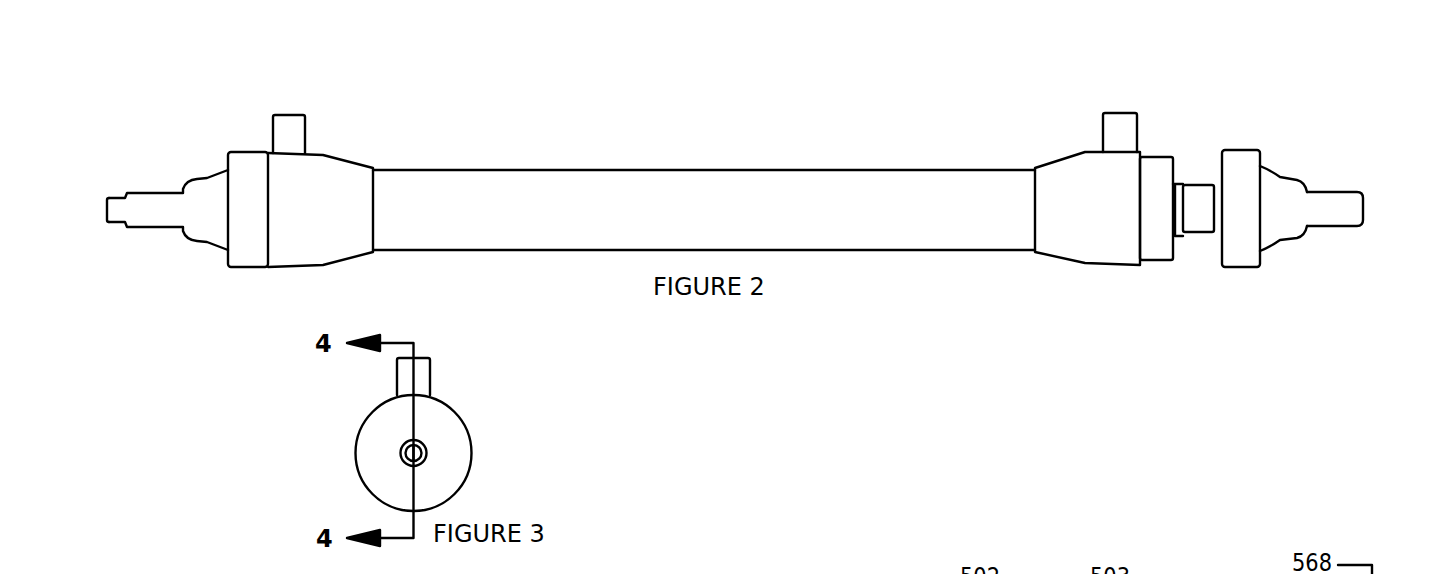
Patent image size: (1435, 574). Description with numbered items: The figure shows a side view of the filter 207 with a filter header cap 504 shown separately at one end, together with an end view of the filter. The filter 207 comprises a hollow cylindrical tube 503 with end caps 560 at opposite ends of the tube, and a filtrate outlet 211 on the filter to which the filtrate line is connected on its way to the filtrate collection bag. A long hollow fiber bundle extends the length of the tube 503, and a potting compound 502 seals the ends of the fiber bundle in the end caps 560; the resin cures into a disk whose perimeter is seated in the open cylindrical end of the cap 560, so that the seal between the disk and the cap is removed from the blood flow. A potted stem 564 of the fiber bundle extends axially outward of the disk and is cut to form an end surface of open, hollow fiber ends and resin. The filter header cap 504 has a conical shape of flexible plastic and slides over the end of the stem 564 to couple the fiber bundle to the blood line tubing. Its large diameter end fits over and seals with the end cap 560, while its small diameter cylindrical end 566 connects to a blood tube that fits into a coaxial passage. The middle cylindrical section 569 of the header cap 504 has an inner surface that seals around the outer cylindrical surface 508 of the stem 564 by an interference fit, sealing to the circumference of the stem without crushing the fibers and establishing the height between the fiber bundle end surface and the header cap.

In FIG. 2, the filter 207 is at (423, 191).
In FIG. 3, the filtrate outlet 211 is at (422, 372).
In FIG. 2, the potting compound 502 is at (1176, 186).
In FIG. 2, the hollow cylindrical tube 503 is at (858, 192).
In FIG. 3, the filter header cap 504 is at (455, 430).
In FIG. 2, the outer cylindrical surface of the stem 508 is at (1193, 236).
In FIG. 2, the end cap 560 is at (1105, 214).
In FIG. 2, the stem 564 is at (1203, 205).
In FIG. 2, the small diameter cylindrical end 566 is at (1337, 229).
In FIG. 2, the middle cylindrical section 569 is at (1283, 245).